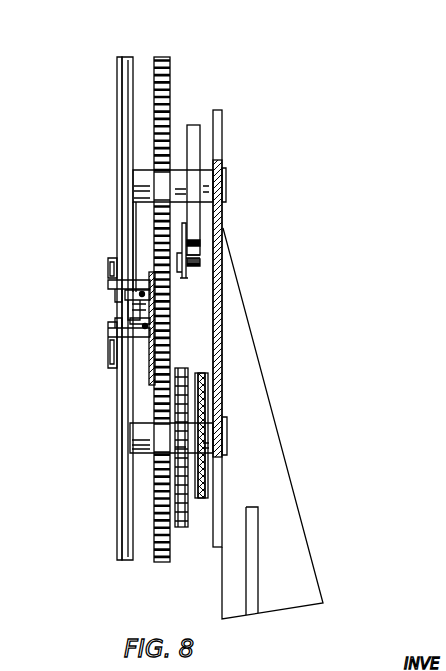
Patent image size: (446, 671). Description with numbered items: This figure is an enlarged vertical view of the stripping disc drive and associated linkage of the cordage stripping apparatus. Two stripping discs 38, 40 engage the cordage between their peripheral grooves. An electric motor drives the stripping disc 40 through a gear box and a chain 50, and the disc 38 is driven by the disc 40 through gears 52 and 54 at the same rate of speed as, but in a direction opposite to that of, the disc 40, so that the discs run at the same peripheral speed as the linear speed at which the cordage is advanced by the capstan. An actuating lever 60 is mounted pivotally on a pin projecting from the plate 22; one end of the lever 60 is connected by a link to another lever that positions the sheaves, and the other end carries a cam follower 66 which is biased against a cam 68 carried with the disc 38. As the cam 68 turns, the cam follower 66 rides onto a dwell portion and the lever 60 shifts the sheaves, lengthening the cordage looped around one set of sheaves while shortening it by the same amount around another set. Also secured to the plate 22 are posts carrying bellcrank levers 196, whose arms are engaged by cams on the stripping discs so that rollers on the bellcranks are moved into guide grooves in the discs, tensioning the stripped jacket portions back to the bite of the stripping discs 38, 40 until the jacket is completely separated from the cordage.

The plate 22 is at (140, 328).
The stripping disc 38 is at (121, 168).
The stripping disc 40 is at (117, 517).
The chain 50 is at (181, 527).
The gear 52 is at (160, 217).
The gear 54 is at (157, 454).
The actuating lever 60 is at (184, 279).
The cam follower 66 is at (197, 251).
The cam 68 is at (194, 125).
The bellcrank levers 196 is at (107, 285).